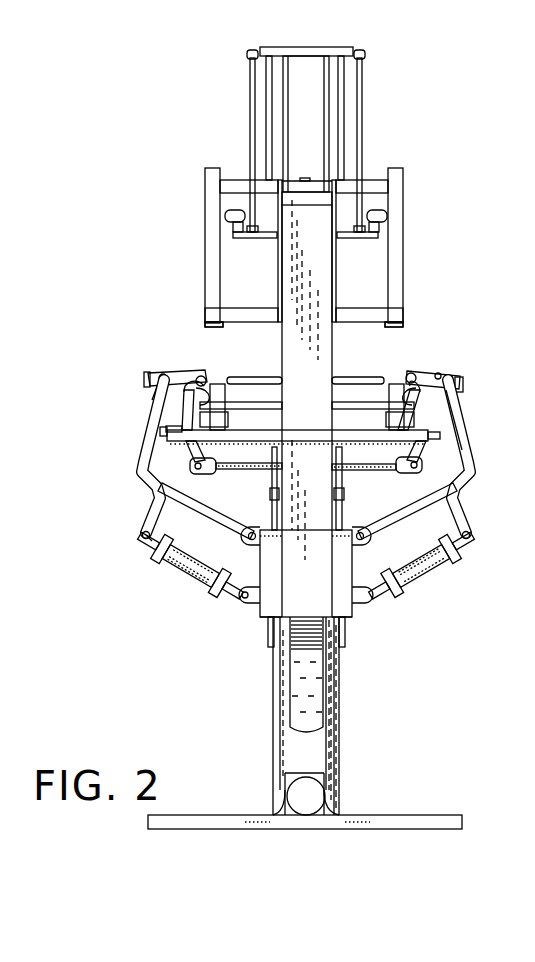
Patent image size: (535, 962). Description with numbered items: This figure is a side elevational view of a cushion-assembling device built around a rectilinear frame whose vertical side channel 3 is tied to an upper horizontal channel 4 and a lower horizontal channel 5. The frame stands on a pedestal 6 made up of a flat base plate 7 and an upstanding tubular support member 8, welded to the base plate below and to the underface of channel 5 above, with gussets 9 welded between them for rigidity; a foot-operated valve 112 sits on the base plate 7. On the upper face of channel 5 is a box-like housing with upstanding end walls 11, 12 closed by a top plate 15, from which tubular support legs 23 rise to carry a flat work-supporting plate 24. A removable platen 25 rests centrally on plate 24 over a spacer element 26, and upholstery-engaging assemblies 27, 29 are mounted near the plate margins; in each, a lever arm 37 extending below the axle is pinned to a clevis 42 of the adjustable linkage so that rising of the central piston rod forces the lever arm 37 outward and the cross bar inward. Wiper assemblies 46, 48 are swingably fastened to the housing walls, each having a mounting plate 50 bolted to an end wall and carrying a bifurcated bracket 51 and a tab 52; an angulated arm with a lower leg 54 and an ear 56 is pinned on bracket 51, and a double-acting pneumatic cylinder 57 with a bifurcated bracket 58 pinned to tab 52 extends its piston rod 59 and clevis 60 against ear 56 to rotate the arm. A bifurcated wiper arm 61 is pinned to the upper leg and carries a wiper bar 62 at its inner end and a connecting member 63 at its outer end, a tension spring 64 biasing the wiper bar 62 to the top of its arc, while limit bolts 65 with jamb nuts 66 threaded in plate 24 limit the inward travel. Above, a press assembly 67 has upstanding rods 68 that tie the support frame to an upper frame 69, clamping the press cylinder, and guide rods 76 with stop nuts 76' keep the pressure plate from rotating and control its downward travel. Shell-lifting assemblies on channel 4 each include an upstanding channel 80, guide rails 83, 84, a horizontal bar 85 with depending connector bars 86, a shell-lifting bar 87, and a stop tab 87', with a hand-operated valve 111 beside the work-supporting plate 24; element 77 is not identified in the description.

The vertical side channel 3 is at (334, 342).
The upper horizontal channel 4 is at (318, 195).
The lower horizontal channel 5 is at (267, 638).
The pedestal 6 is at (355, 731).
The base plate 7 is at (234, 815).
The tubular support member 8 is at (272, 765).
The gussets 9 is at (293, 683).
The end wall 11 is at (262, 615).
The end wall 12 is at (350, 614).
The top plate 15 is at (361, 540).
The tubular support legs 23 is at (271, 492).
The work-supporting plate 24 is at (254, 441).
The platen 25 is at (390, 410).
The spacer element 26 is at (350, 436).
The upholstery-engaging assembly 27 is at (170, 415).
The upholstery-engaging assembly 29 is at (432, 410).
The lever arm 37 is at (192, 451).
The clevis 42 is at (206, 471).
The wiper assembly 46 is at (128, 476).
The wiper assembly 48 is at (470, 485).
The mounting plate 50 is at (258, 605).
The bifurcated bracket 51 is at (246, 538).
The tab 52 is at (253, 595).
The lower leg 54 is at (408, 508).
The ear 56 is at (152, 496).
The pneumatic cylinder 57 is at (190, 582).
The bifurcated bracket 58 is at (380, 592).
The piston rod 59 is at (152, 548).
The clevis 60 is at (468, 540).
The wiper arm 61 is at (197, 370).
The wiper bar 62 is at (206, 380).
The connecting member 63 is at (162, 374).
The tension spring 64 is at (153, 390).
The limit bolts 65 is at (441, 436).
The jamb nuts 66 is at (418, 446).
The press assembly 67 is at (364, 118).
The upstanding rods 68 is at (347, 80).
The upper frame 69 is at (318, 50).
The guide rods 76 is at (236, 145).
The stop nuts 76' is at (230, 55).
The bracket 77 is at (386, 215).
The upstanding channel 80 is at (335, 97).
The guide rail 83 is at (336, 296).
The guide rail 84 is at (278, 296).
The horizontal bar 85 is at (245, 185).
The connector bars 86 is at (205, 250).
The shell-lifting bar 87 is at (226, 333).
The stop tab 87' is at (406, 335).
The hand-operated valve 111 is at (163, 429).
The foot-operated valve 112 is at (324, 786).